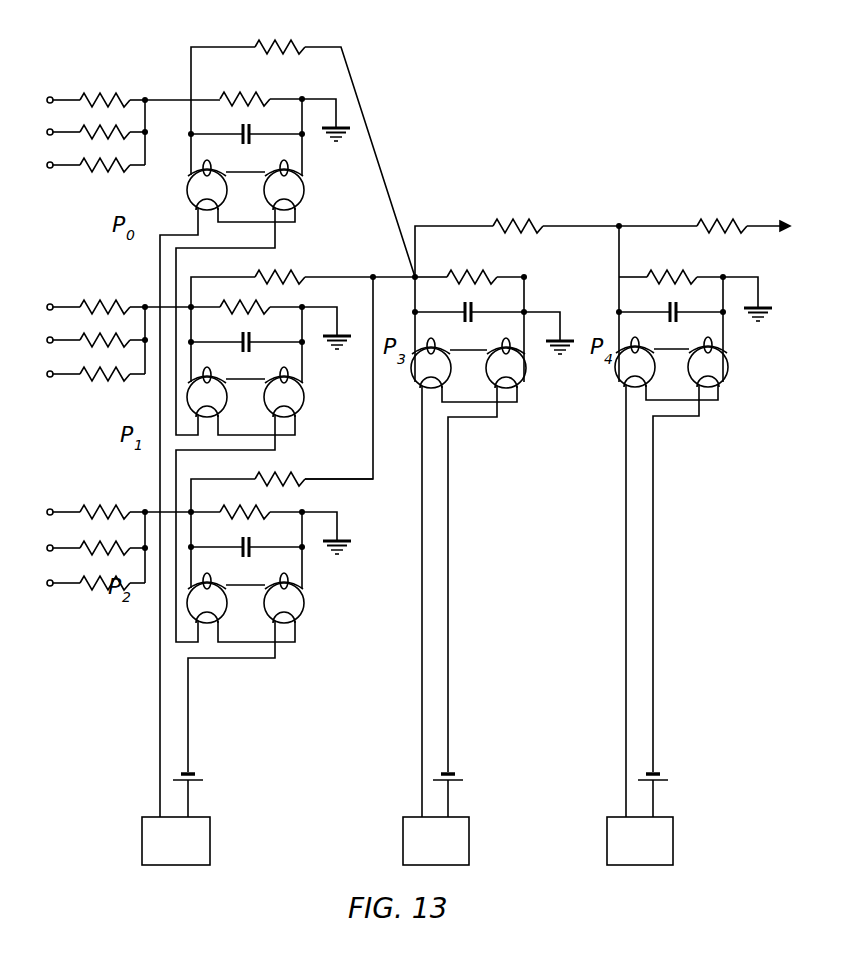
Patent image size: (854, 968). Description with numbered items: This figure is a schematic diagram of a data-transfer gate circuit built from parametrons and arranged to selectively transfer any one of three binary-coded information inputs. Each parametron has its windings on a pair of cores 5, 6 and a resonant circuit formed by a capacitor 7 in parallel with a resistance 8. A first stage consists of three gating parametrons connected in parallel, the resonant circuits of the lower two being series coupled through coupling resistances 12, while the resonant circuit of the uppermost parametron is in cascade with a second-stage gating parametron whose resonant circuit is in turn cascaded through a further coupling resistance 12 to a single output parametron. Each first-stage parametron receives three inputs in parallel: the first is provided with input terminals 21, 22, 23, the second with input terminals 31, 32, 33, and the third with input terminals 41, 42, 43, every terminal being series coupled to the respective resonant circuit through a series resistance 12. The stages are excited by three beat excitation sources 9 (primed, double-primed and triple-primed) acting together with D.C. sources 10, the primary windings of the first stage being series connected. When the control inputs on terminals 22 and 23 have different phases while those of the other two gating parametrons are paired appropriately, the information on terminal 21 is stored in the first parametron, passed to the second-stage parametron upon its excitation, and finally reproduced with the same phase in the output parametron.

The core 5 is at (185, 192).
The core 6 is at (303, 192).
The capacitor 7 is at (252, 134).
The resistance 8 is at (270, 94).
The beat excitation source 9 is at (407, 841).
The D.C. source 10 is at (197, 778).
The coupling resistance 12 is at (122, 92).
The input terminal 21 is at (46, 167).
The input terminal 22 is at (46, 134).
The input terminal 23 is at (46, 102).
The input terminal 31 is at (46, 377).
The input terminal 32 is at (46, 343).
The input terminal 33 is at (46, 310).
The input terminal 41 is at (46, 586).
The input terminal 42 is at (46, 551).
The input terminal 43 is at (46, 515).